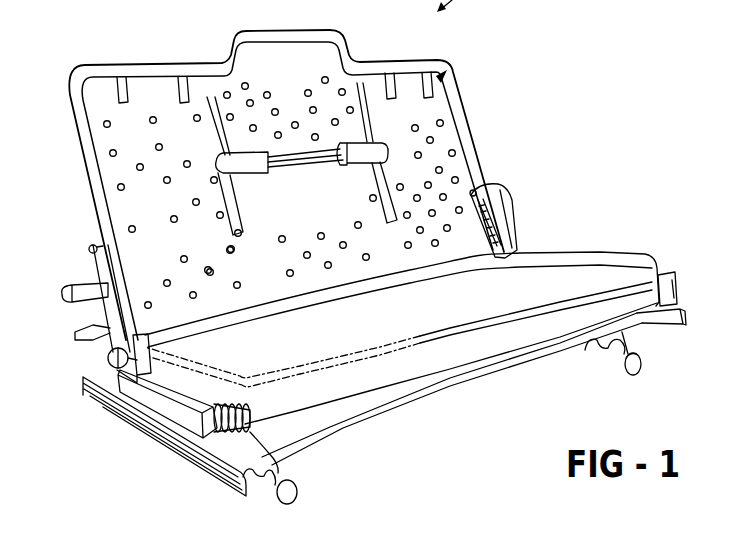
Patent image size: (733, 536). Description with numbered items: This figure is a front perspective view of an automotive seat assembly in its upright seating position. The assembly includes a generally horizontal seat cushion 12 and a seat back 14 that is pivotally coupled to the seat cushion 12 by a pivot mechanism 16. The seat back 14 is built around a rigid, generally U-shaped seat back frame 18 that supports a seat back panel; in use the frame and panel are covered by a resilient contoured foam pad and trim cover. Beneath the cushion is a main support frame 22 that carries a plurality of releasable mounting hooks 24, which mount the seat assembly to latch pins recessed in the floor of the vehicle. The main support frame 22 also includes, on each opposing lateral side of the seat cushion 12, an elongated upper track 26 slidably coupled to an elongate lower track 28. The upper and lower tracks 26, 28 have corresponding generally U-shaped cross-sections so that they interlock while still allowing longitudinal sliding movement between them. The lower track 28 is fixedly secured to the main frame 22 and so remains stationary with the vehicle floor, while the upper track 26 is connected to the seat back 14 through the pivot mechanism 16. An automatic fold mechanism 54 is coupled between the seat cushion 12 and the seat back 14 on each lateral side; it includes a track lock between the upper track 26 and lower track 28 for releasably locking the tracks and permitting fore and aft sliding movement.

The seat cushion 12 is at (662, 262).
The seat back 14 is at (471, 113).
The pivot mechanism 16 is at (90, 306).
The seat back frame 18 is at (153, 72).
The main support frame 22 is at (327, 426).
The releasable mounting hooks 24 is at (620, 375).
The upper track 26 is at (187, 427).
The lower track 28 is at (83, 403).
The auto fold mechanism 54 is at (100, 367).